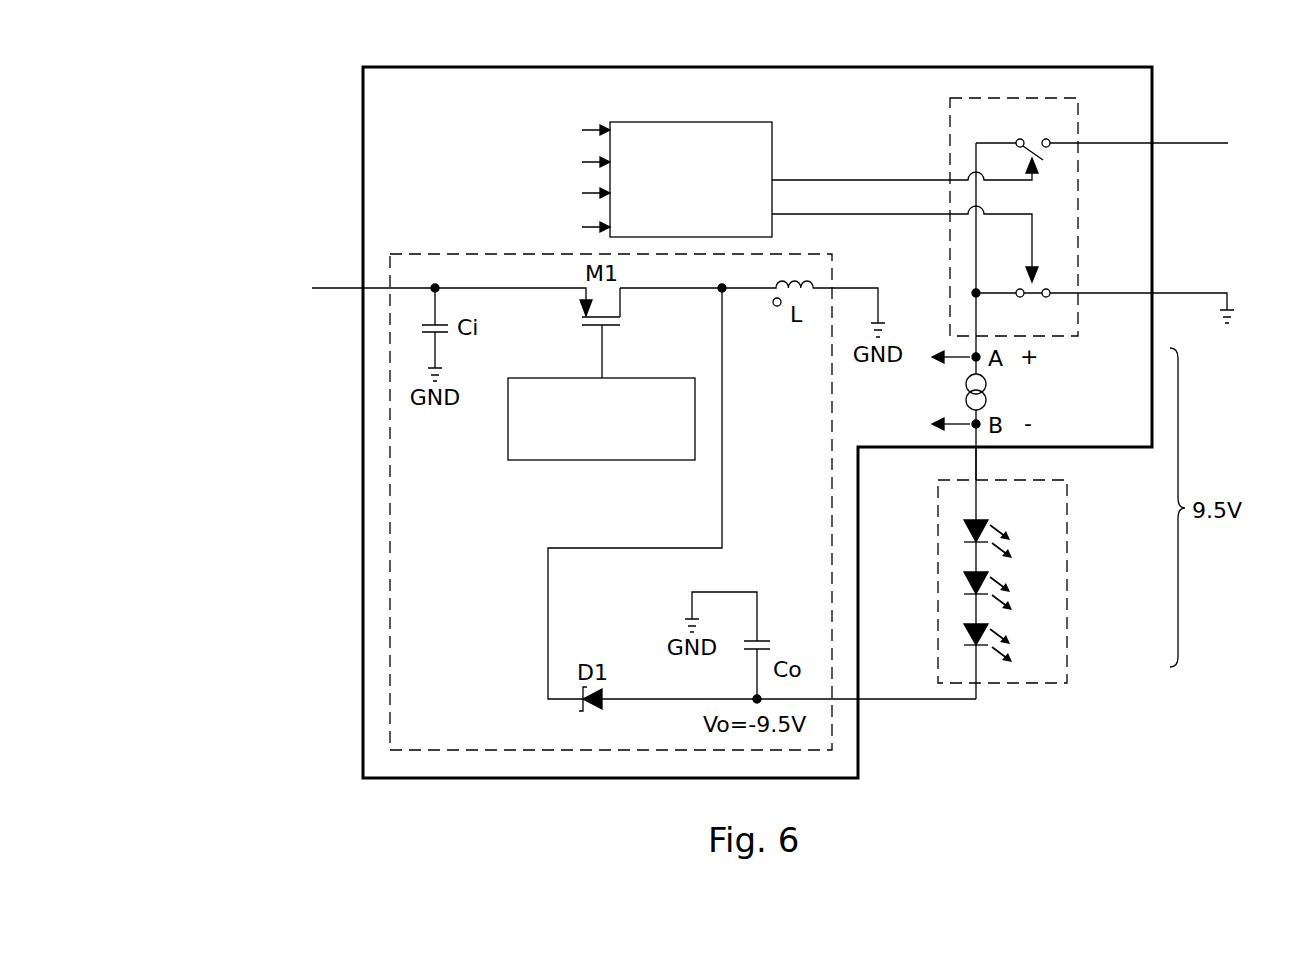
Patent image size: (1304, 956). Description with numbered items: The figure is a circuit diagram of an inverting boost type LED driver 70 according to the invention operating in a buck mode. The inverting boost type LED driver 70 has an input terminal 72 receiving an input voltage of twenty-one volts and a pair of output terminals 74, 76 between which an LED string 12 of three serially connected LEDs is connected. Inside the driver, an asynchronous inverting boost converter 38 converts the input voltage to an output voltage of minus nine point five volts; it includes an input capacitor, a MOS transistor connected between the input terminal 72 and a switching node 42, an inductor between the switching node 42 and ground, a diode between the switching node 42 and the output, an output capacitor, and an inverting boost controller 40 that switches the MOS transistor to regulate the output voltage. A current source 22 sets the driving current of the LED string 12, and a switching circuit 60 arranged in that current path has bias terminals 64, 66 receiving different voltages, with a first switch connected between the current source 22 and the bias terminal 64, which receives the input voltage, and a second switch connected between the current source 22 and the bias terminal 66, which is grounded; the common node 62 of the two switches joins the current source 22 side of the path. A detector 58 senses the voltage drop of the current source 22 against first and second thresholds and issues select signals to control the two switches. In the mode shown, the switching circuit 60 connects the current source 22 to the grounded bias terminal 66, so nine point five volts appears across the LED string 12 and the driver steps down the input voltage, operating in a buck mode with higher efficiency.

The LED string 12 is at (1018, 685).
The current source 22 is at (964, 379).
The asynchronous inverting boost converter 38 is at (455, 253).
The inverting boost controller 40 is at (597, 462).
The switching node 42 is at (720, 292).
The detector 58 is at (772, 143).
The switching circuit 60 is at (950, 140).
The common node 62 is at (972, 291).
The bias terminal 64 is at (1098, 143).
The bias terminal 66 is at (1098, 293).
The inverting boost type LED driver 70 is at (362, 420).
The input terminal 72 is at (340, 286).
The output terminal 74 is at (880, 700).
The output terminal 76 is at (976, 463).